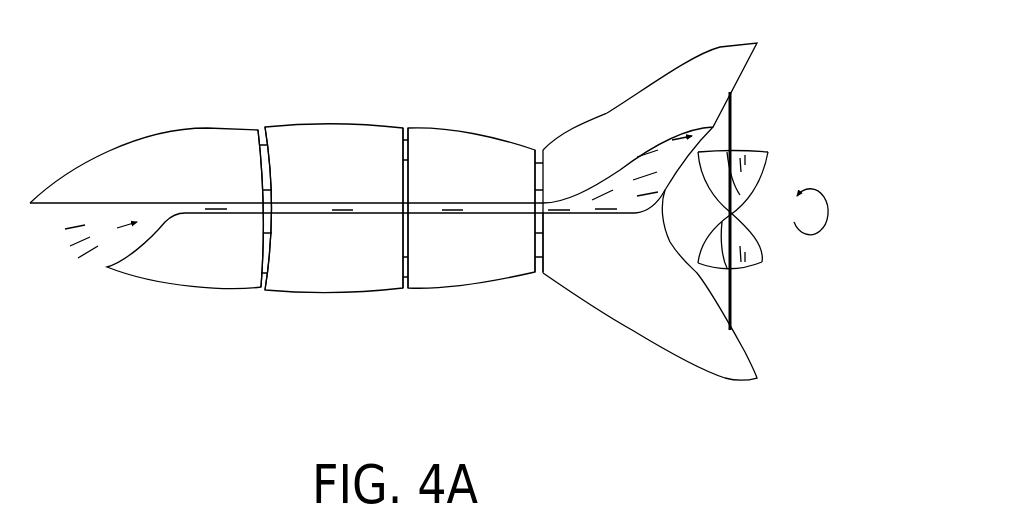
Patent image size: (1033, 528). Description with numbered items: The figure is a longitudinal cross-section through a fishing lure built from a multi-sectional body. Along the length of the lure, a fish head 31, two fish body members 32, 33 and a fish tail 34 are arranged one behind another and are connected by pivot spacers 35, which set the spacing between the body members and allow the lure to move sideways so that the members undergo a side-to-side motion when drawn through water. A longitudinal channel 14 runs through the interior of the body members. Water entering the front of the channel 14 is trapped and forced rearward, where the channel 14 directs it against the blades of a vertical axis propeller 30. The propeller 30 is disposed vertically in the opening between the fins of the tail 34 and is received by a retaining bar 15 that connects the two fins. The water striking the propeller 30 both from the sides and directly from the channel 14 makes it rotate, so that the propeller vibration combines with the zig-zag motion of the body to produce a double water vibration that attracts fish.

The longitudinal channel 14 is at (488, 200).
The retaining bar 15 is at (731, 115).
The vertical axis propeller 30 is at (765, 254).
The fish head 31 is at (153, 284).
The fish body 32 is at (320, 297).
The fish body 33 is at (472, 288).
The fish tail 34 is at (632, 332).
The pivot spacers 35 is at (262, 130).